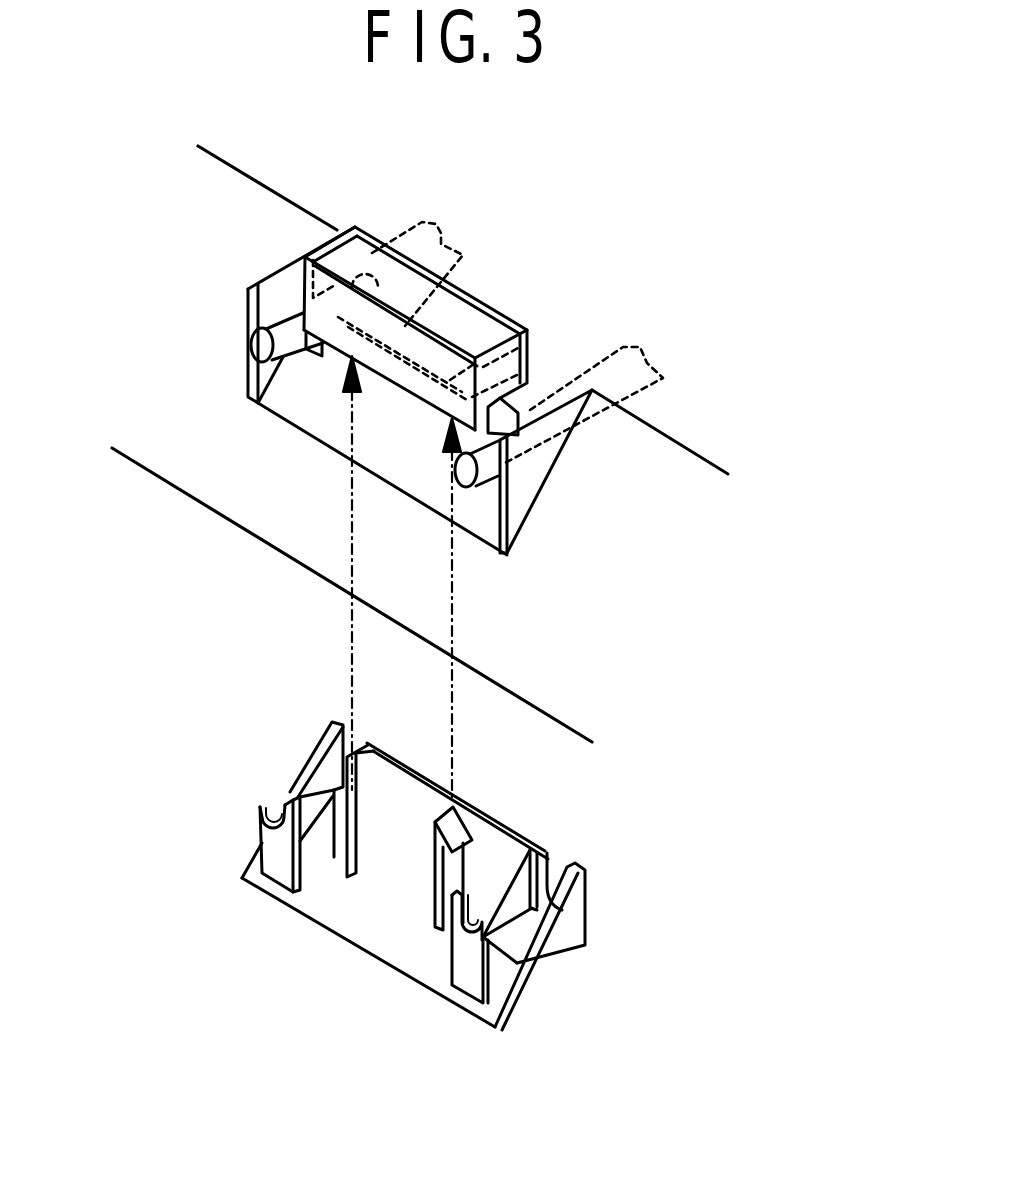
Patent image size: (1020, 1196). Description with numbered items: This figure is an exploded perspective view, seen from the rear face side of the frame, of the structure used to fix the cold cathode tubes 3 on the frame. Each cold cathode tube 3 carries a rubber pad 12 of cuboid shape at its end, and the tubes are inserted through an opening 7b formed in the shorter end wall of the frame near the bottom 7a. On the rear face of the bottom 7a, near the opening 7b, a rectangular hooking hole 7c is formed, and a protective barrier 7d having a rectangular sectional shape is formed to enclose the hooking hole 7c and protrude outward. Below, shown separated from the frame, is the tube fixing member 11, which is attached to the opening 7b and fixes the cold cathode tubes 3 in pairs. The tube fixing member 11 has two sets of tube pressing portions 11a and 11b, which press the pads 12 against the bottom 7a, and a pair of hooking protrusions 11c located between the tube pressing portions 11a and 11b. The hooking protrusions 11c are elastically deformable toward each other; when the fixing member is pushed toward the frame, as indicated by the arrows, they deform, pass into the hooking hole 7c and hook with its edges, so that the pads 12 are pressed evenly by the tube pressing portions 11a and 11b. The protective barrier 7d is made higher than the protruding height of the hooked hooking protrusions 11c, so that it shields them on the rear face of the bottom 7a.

The cold cathode tube 3 is at (285, 327).
The bottom 7a is at (580, 325).
The opening 7b is at (314, 405).
The hooking hole 7c is at (445, 282).
The protective barrier 7d is at (463, 310).
The pad 12 is at (292, 290).
The tube fixing member 11 is at (333, 905).
The tube pressing portion 11a is at (548, 905).
The tube pressing portion 11b is at (277, 853).
The hooking protrusion 11c is at (447, 805).